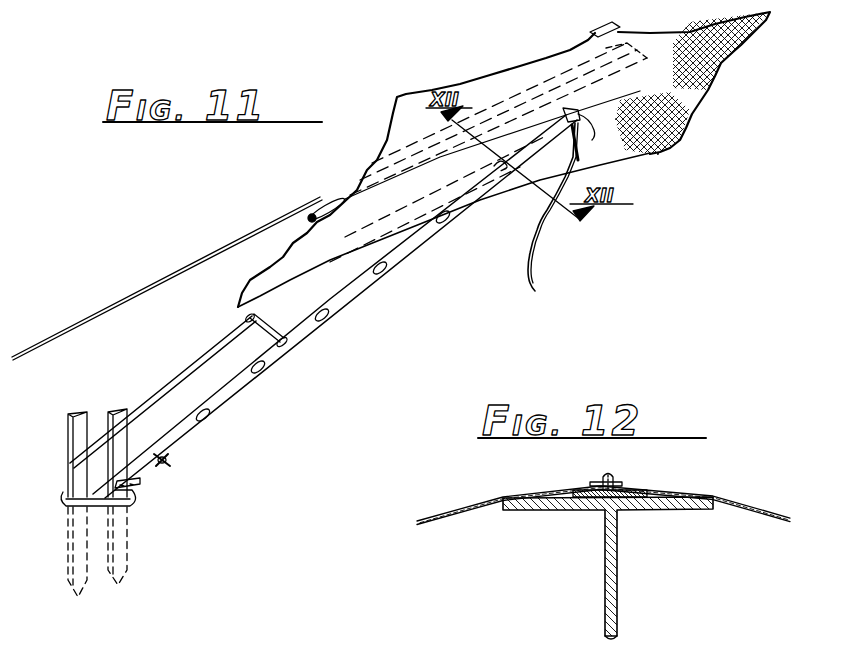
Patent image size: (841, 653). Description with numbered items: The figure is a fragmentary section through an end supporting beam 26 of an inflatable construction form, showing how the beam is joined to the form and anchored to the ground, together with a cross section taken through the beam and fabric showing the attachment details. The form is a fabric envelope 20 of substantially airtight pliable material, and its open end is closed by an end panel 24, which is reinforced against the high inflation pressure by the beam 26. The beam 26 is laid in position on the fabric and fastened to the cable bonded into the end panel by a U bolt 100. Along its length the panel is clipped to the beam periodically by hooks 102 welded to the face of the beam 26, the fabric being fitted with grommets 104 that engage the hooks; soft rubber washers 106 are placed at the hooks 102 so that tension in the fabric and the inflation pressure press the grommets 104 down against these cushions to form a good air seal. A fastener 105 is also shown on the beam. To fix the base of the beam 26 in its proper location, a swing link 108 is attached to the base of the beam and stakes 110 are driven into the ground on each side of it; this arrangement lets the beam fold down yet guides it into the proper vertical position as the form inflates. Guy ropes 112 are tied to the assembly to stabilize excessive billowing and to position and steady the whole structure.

In FIG. 11, the fabric envelope 20 is at (720, 50).
In FIG. 11, the end panel 24 is at (675, 120).
In FIG. 12, the end panel 24 is at (472, 505).
In FIG. 11, the beam 26 is at (207, 378).
In FIG. 12, the beam 26 is at (617, 575).
In FIG. 11, the U bolt 100 is at (545, 68).
In FIG. 11, the hook 102 is at (212, 416).
In FIG. 12, the hook 102 is at (614, 474).
In FIG. 12, the grommet 104 is at (600, 481).
In FIG. 11, the fastener 105 is at (172, 461).
In FIG. 11, the soft rubber washer 106 is at (382, 272).
In FIG. 12, the soft rubber washer 106 is at (650, 490).
In FIG. 11, the swing link 108 is at (64, 496).
In FIG. 11, the stake 110 is at (110, 412).
In FIG. 11, the guy rope 112 is at (222, 248).